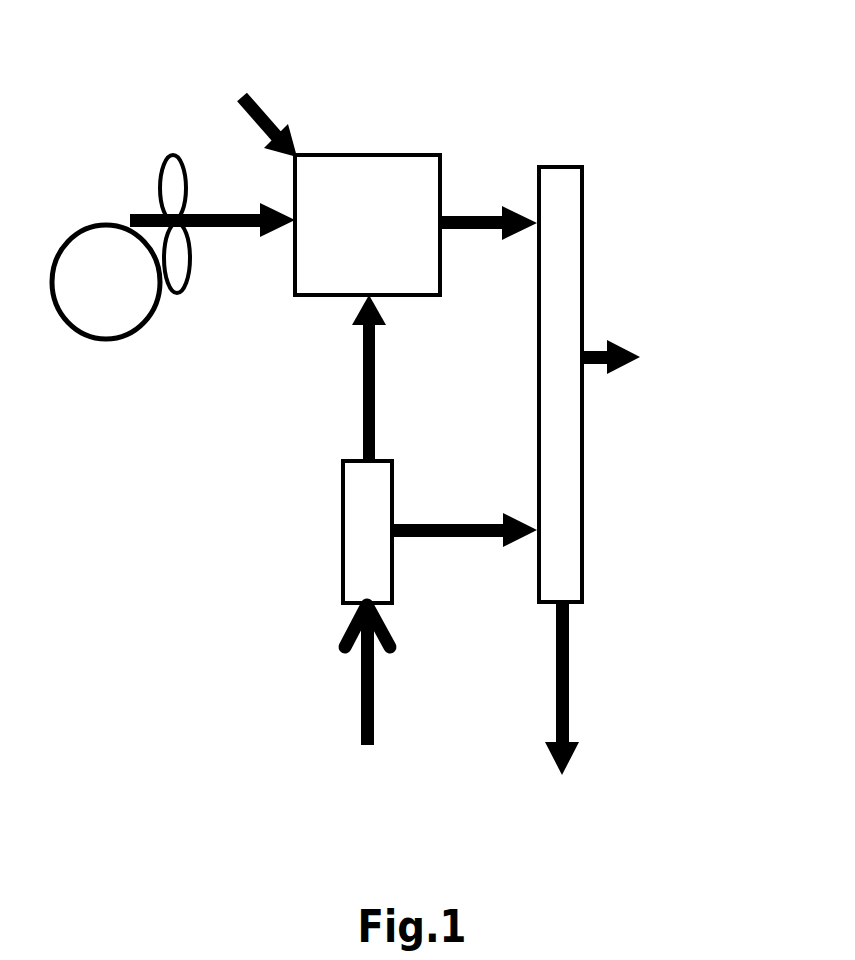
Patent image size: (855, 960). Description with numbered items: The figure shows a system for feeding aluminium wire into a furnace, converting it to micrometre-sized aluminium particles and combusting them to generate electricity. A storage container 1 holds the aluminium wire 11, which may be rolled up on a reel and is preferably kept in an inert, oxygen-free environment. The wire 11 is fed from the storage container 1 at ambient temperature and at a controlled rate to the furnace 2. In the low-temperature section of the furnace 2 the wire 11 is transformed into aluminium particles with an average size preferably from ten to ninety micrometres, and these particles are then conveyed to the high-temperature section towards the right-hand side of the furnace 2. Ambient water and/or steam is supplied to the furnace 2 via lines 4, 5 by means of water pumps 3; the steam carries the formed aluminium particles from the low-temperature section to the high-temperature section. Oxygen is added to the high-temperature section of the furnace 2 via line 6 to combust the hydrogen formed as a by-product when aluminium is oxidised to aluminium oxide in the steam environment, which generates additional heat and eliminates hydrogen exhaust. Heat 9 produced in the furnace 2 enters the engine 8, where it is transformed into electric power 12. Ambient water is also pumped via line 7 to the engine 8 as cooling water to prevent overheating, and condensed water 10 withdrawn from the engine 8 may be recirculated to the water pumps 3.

The storage container 1 is at (83, 218).
The furnace 2 is at (357, 132).
The water pumps 3 is at (332, 605).
The line 4 is at (367, 697).
The line 5 is at (356, 378).
The line 6 is at (255, 104).
The line 7 is at (448, 545).
The engine 8 is at (558, 150).
The heat 9 is at (480, 197).
The condensed water 10 is at (627, 378).
The aluminium wire 11 is at (212, 237).
The electric power 12 is at (565, 711).